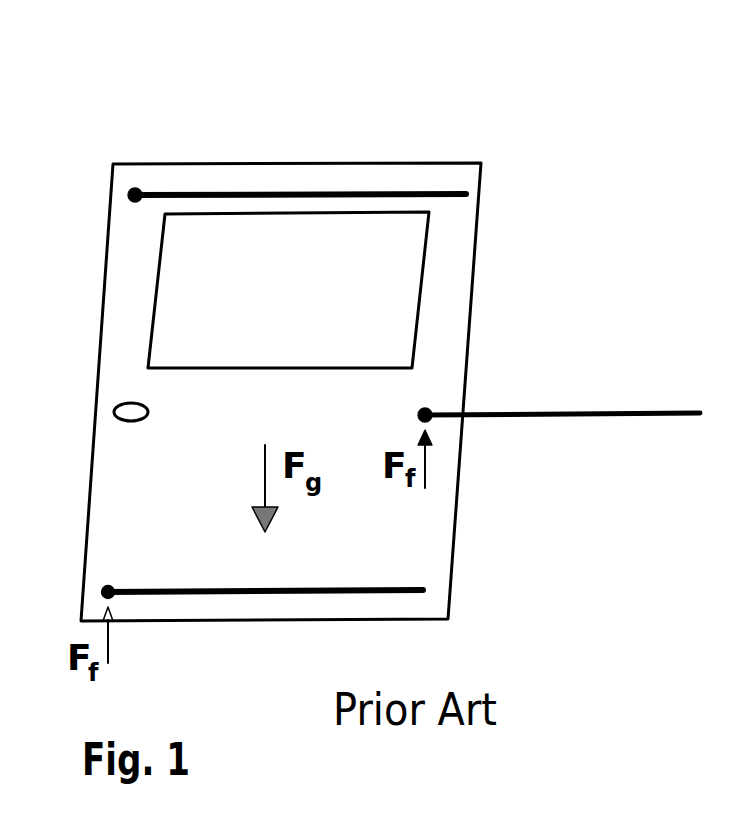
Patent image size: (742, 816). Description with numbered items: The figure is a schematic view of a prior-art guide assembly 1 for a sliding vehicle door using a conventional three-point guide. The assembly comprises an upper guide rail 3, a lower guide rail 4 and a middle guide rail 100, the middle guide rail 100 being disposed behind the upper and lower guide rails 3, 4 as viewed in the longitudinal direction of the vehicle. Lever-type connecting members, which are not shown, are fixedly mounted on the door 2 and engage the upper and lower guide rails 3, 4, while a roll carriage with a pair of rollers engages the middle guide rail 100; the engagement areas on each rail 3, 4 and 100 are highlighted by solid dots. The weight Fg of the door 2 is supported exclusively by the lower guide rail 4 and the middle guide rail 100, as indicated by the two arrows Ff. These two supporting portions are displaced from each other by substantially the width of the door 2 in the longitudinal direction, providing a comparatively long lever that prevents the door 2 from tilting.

The guide assembly 1 is at (495, 36).
The door 2 is at (462, 296).
The upper guide rail 3 is at (250, 192).
The lower guide rail 4 is at (254, 592).
The middle guide rail 100 is at (590, 412).